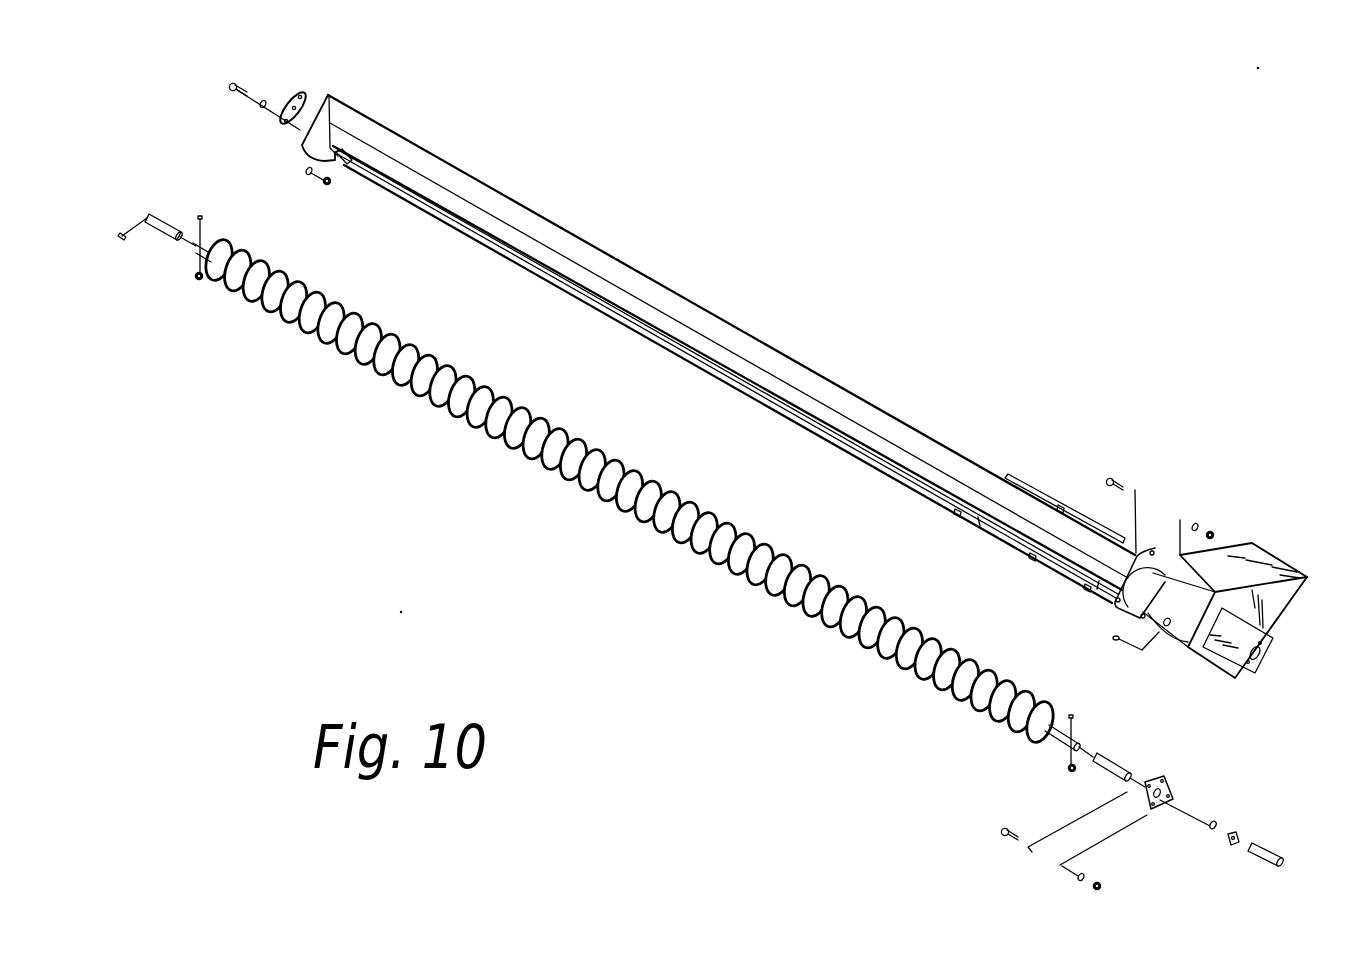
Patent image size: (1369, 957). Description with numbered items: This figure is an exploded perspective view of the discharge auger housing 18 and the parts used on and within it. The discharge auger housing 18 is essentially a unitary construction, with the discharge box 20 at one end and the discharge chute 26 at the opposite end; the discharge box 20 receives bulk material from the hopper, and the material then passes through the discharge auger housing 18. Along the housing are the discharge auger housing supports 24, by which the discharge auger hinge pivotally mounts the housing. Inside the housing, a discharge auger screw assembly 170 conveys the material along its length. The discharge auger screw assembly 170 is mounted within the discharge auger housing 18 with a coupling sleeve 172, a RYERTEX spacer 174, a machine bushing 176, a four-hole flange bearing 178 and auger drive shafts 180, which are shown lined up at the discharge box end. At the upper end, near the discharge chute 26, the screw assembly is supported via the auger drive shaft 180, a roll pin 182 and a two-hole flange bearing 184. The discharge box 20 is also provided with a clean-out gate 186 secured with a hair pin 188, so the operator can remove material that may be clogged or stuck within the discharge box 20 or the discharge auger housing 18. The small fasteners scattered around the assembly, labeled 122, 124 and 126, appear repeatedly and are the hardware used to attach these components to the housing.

The discharge auger housing 18 is at (445, 163).
The discharge box 20 is at (1280, 553).
The discharge auger housing supports 24 is at (1038, 493).
The discharge chute 26 is at (352, 162).
The nut 122 is at (327, 188).
The screw 124 is at (232, 84).
The washer 126 is at (262, 110).
The discharge auger screw assembly 170 is at (962, 700).
The coupling sleeve 172 is at (1284, 851).
The RYERTEX spacer 174 is at (1238, 832).
The machine bushing 176 is at (1209, 832).
The four-hole flange bearing 178 is at (1165, 790).
The auger drive shafts 180 is at (178, 216).
The roll pin 182 is at (122, 242).
The two-hole flange bearing 184 is at (298, 96).
The clean-out gate 186 is at (1166, 628).
The hair pin 188 is at (1113, 637).